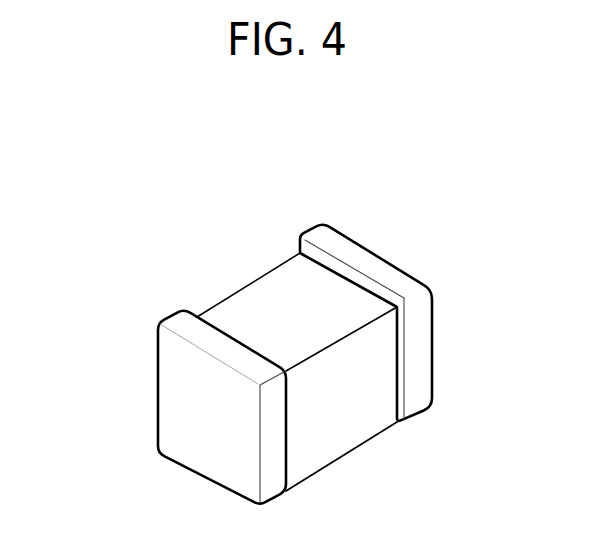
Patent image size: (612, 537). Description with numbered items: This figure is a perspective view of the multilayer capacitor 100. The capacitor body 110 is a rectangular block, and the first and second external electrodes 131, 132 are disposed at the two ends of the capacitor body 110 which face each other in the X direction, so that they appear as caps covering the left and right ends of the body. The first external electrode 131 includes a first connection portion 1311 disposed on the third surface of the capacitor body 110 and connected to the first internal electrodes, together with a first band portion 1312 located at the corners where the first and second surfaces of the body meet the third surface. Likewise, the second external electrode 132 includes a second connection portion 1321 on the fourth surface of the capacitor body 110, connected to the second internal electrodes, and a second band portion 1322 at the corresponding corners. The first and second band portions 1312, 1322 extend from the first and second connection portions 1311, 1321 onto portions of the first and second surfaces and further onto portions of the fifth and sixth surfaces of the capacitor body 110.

The multilayer capacitor 100 is at (262, 280).
The capacitor body 110 is at (230, 308).
The first external electrode 131 is at (82, 373).
The first connection portion 1311 is at (207, 412).
The first band portion 1312 is at (207, 340).
The second external electrode 132 is at (498, 191).
The second connection portion 1321 is at (417, 277).
The second band portion 1322 is at (367, 262).